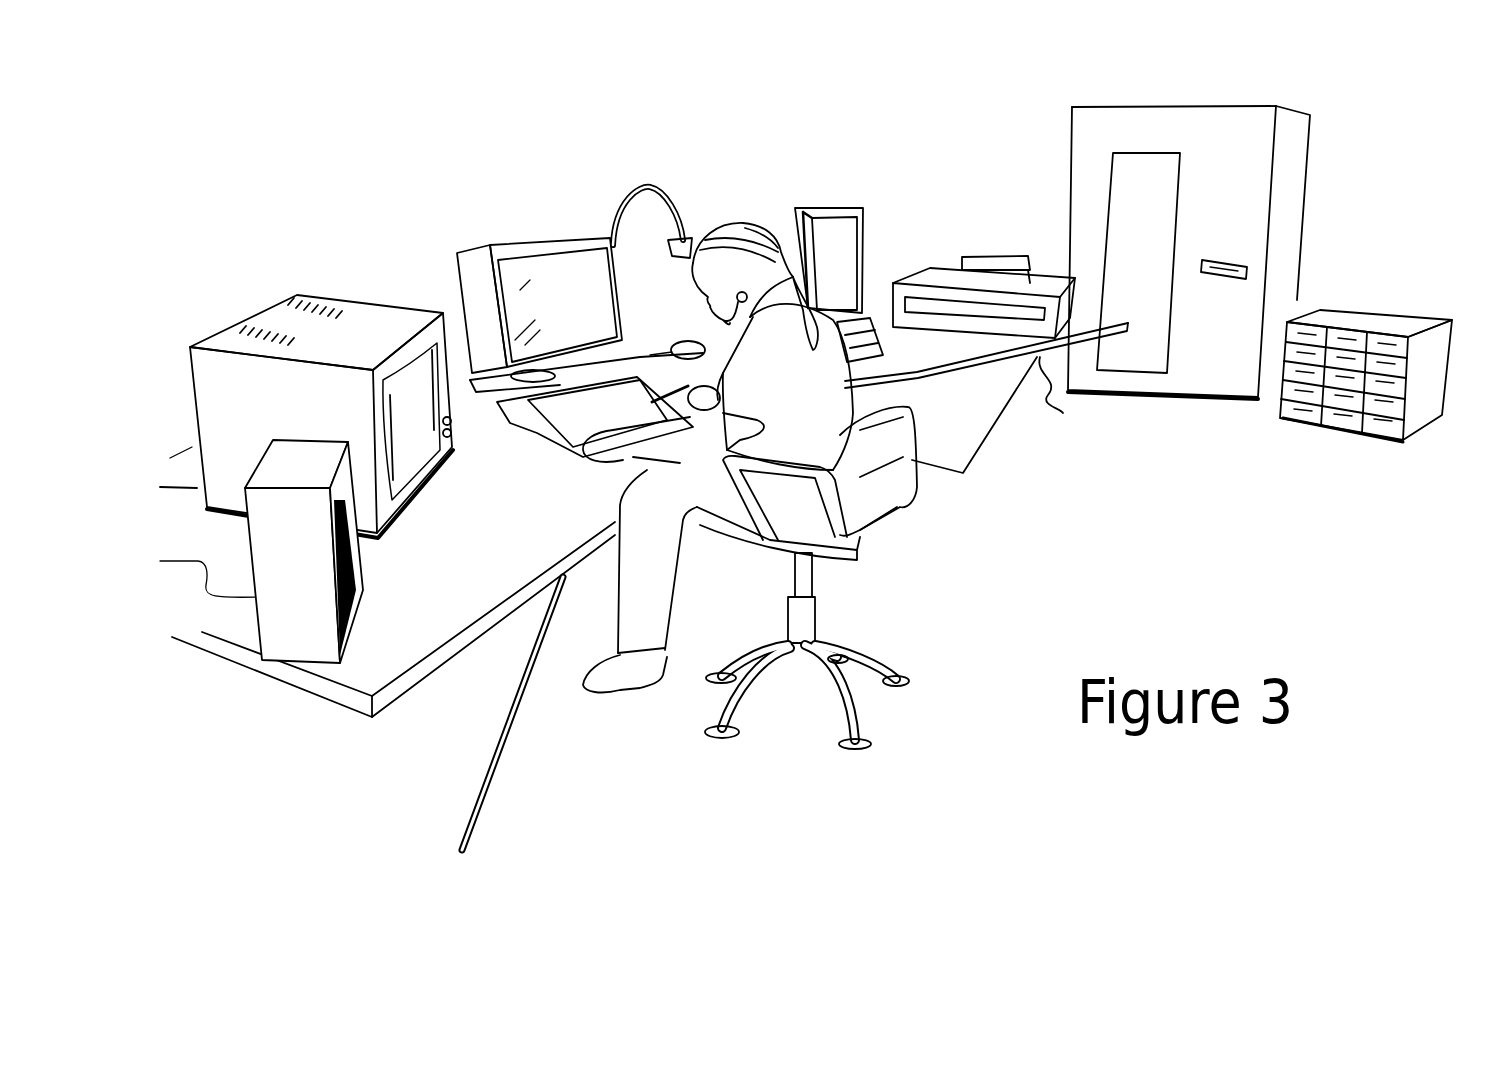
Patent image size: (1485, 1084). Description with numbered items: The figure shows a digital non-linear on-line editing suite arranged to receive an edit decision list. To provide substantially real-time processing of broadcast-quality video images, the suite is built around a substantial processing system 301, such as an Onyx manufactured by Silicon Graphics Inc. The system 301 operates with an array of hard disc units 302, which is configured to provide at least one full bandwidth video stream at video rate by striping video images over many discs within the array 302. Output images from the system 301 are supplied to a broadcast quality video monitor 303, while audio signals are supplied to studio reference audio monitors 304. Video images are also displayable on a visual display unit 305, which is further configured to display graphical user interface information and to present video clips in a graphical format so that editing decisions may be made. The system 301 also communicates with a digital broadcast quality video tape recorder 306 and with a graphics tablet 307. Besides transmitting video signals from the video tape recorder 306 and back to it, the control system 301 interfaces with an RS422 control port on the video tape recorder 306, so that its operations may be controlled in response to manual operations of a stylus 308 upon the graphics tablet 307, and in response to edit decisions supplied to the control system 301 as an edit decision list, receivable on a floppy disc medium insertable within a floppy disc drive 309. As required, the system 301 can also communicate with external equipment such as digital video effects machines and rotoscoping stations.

The processing system 301 is at (1277, 163).
The array of hard disc units 302 is at (1408, 415).
The broadcast quality video monitor 303 is at (358, 326).
The studio reference audio monitors 304 is at (830, 227).
The visual display unit 305 is at (542, 276).
The digital broadcast quality video tape recorder 306 is at (945, 275).
The graphics tablet 307 is at (567, 412).
The stylus 308 is at (666, 362).
The floppy disc drive 309 is at (1247, 268).